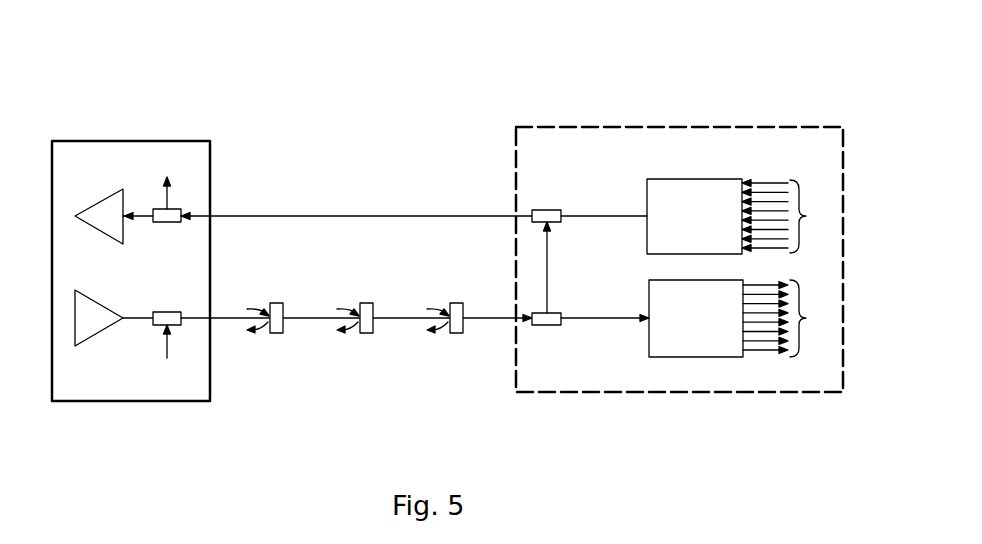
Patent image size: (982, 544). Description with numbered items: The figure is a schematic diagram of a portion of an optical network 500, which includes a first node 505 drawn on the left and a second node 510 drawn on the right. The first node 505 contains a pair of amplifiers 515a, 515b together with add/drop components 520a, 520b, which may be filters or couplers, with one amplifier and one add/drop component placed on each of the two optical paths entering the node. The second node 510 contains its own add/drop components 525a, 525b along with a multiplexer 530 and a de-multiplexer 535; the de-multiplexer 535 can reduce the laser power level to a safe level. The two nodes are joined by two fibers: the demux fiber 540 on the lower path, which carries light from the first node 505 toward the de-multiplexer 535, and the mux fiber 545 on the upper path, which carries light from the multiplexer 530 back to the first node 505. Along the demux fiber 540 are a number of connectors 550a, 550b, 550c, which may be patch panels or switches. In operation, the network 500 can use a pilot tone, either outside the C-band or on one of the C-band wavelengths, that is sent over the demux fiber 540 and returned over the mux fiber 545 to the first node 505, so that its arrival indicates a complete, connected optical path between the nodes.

The optical network 500 is at (328, 100).
The first node 505 is at (160, 401).
The second node 510 is at (793, 392).
The amplifier 515a is at (101, 200).
The amplifier 515b is at (102, 337).
The add/drop component 520a is at (176, 209).
The add/drop component 520b is at (176, 312).
The add/drop component 525a is at (537, 210).
The add/drop component 525b is at (537, 313).
The multiplexer 530 is at (700, 179).
The de-multiplexer 535 is at (700, 357).
The demux fiber 540 is at (310, 320).
The mux fiber 545 is at (287, 214).
The connector 550a is at (274, 302).
The connector 550b is at (365, 302).
The connector 550c is at (451, 334).